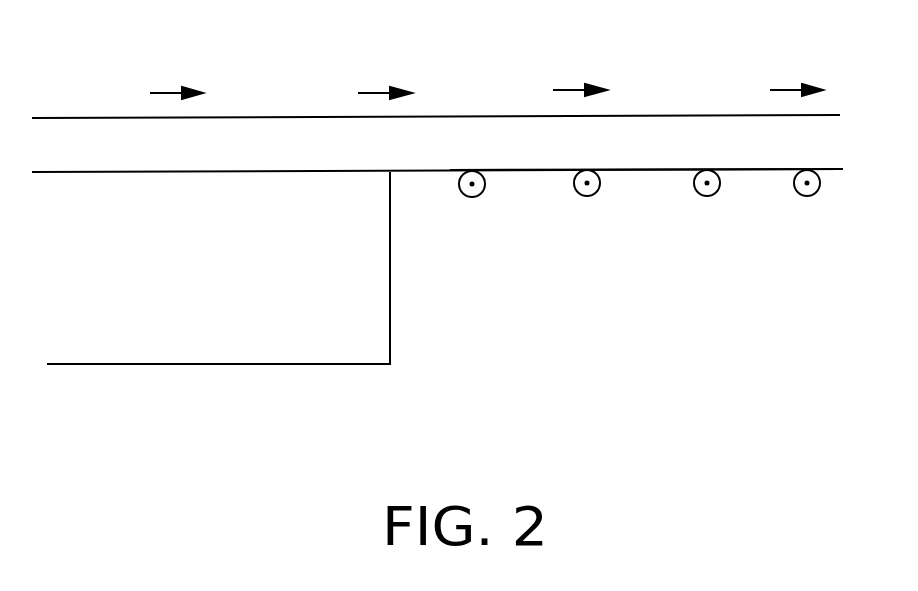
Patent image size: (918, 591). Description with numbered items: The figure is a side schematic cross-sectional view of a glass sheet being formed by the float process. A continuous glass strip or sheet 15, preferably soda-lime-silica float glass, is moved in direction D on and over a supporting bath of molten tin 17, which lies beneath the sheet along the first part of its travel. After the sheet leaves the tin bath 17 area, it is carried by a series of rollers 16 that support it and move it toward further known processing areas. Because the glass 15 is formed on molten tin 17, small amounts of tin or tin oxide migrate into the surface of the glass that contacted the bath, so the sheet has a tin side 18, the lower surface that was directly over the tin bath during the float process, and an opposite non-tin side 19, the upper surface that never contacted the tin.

The glass sheet 15 is at (644, 125).
The rollers 16 is at (585, 196).
The tin bath 17 is at (270, 355).
The tin side 18 is at (528, 170).
The non-tin side 19 is at (745, 115).
The direction D is at (565, 90).